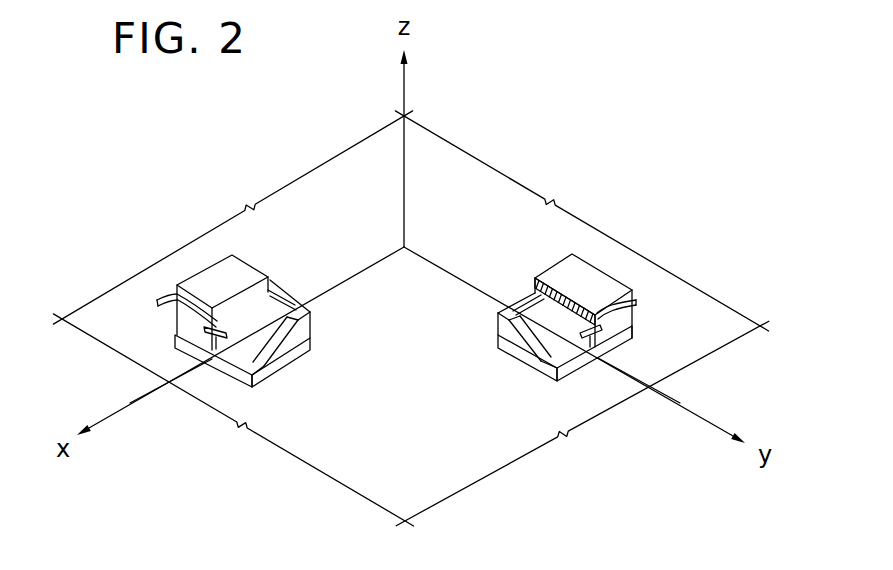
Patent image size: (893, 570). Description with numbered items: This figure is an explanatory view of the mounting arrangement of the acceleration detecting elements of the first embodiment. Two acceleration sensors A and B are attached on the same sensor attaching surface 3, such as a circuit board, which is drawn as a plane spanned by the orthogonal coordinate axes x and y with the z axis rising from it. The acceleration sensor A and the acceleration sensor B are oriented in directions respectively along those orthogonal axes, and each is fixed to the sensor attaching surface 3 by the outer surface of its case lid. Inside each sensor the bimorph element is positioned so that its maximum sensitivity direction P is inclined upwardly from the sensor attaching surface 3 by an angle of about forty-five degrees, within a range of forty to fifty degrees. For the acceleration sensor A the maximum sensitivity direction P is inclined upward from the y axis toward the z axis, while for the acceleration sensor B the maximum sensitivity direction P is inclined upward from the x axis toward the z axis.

The sensor attaching surface 3 is at (478, 464).
The acceleration sensor A is at (600, 254).
The acceleration sensor B is at (203, 260).
The maximum sensitivity direction P is at (650, 300).